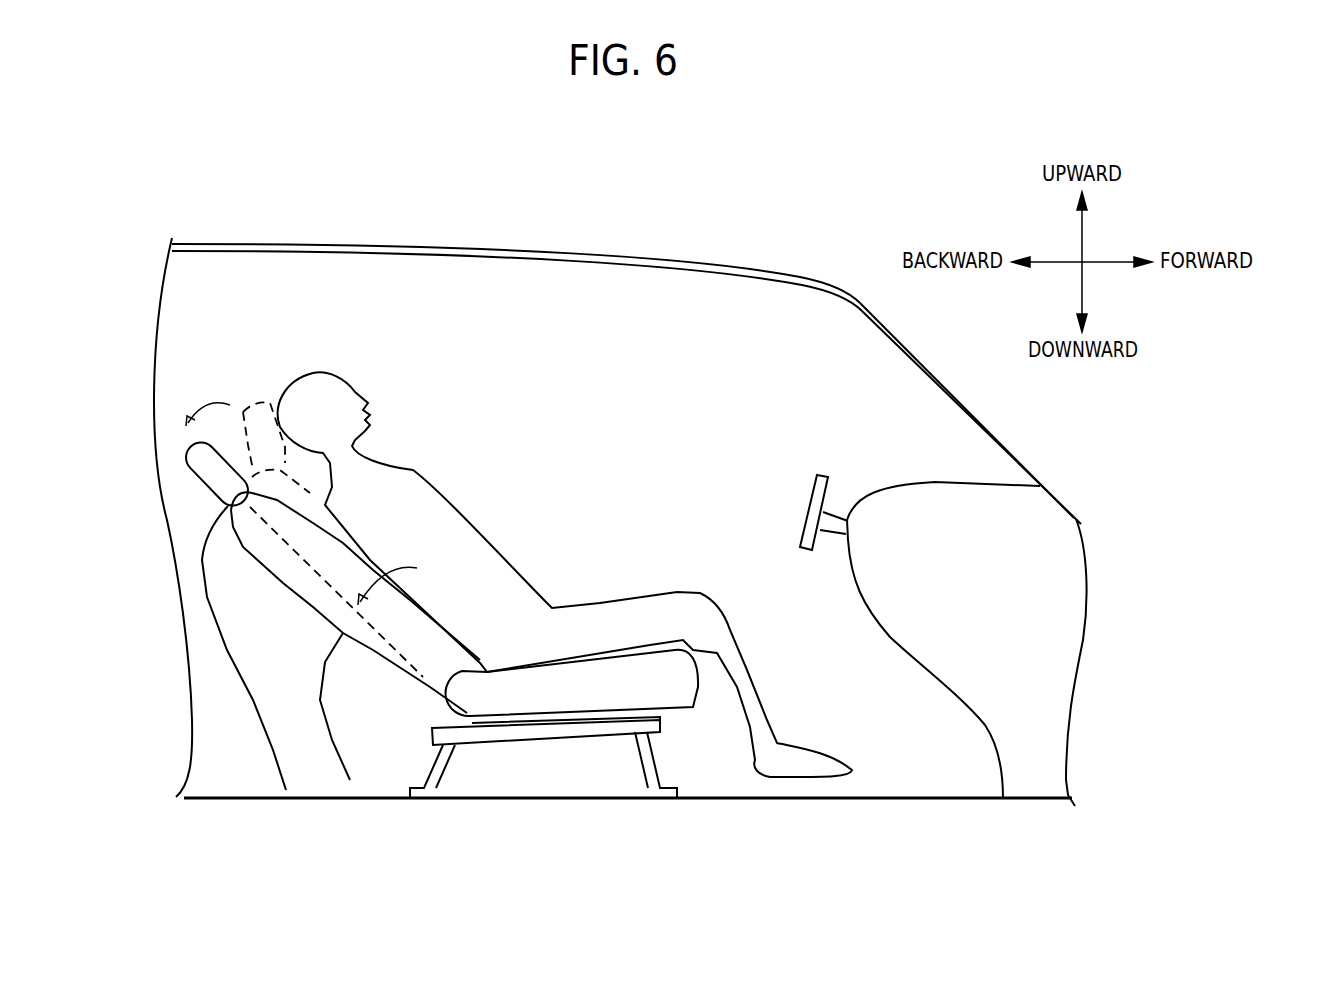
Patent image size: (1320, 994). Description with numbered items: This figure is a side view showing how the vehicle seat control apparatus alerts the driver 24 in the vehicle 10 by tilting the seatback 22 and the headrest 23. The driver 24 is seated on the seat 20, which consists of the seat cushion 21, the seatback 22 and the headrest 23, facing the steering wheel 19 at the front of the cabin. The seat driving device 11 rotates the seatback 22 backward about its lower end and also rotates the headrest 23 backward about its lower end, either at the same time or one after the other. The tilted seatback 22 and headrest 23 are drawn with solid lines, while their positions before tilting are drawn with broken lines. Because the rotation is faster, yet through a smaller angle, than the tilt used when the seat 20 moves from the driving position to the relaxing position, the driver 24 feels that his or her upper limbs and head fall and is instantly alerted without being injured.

The vehicle 10 is at (518, 196).
The seat driving device 11 is at (600, 727).
The steering wheel 19 is at (820, 470).
The seat 20 is at (498, 857).
The seat cushion 21 is at (497, 702).
The seatback 22 is at (350, 780).
The headrest 23 is at (286, 780).
The driver 24 is at (315, 372).